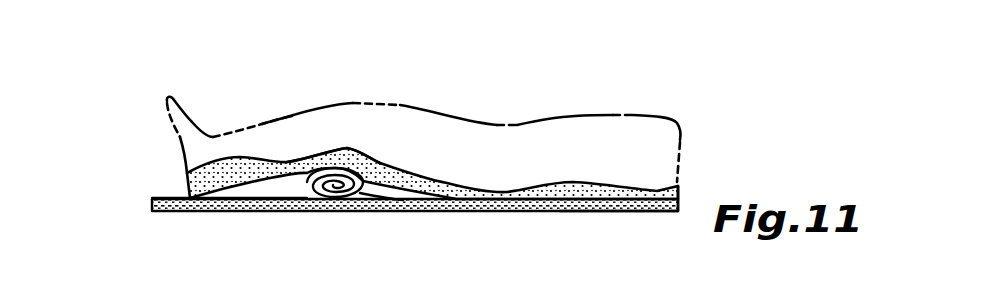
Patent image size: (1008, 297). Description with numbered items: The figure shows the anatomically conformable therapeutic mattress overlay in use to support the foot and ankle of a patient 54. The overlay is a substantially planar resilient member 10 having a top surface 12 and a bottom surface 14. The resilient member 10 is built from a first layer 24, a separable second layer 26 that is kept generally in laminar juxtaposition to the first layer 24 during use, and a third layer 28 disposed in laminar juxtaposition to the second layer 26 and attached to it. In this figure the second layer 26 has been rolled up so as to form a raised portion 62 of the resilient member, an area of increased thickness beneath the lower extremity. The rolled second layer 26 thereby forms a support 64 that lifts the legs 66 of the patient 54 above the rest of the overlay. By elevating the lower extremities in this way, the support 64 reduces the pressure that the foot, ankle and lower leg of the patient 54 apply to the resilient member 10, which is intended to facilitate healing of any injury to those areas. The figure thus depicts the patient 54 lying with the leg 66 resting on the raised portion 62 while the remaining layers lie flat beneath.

The resilient member 10 is at (655, 191).
The top surface 12 is at (597, 182).
The bottom surface 14 is at (627, 212).
The first layer 24 is at (185, 176).
The second layer 26 is at (405, 210).
The third layer 28 is at (232, 211).
The patient 54 is at (563, 117).
The raised portion 62 is at (347, 148).
The support 64 is at (297, 193).
The legs 66 is at (283, 118).